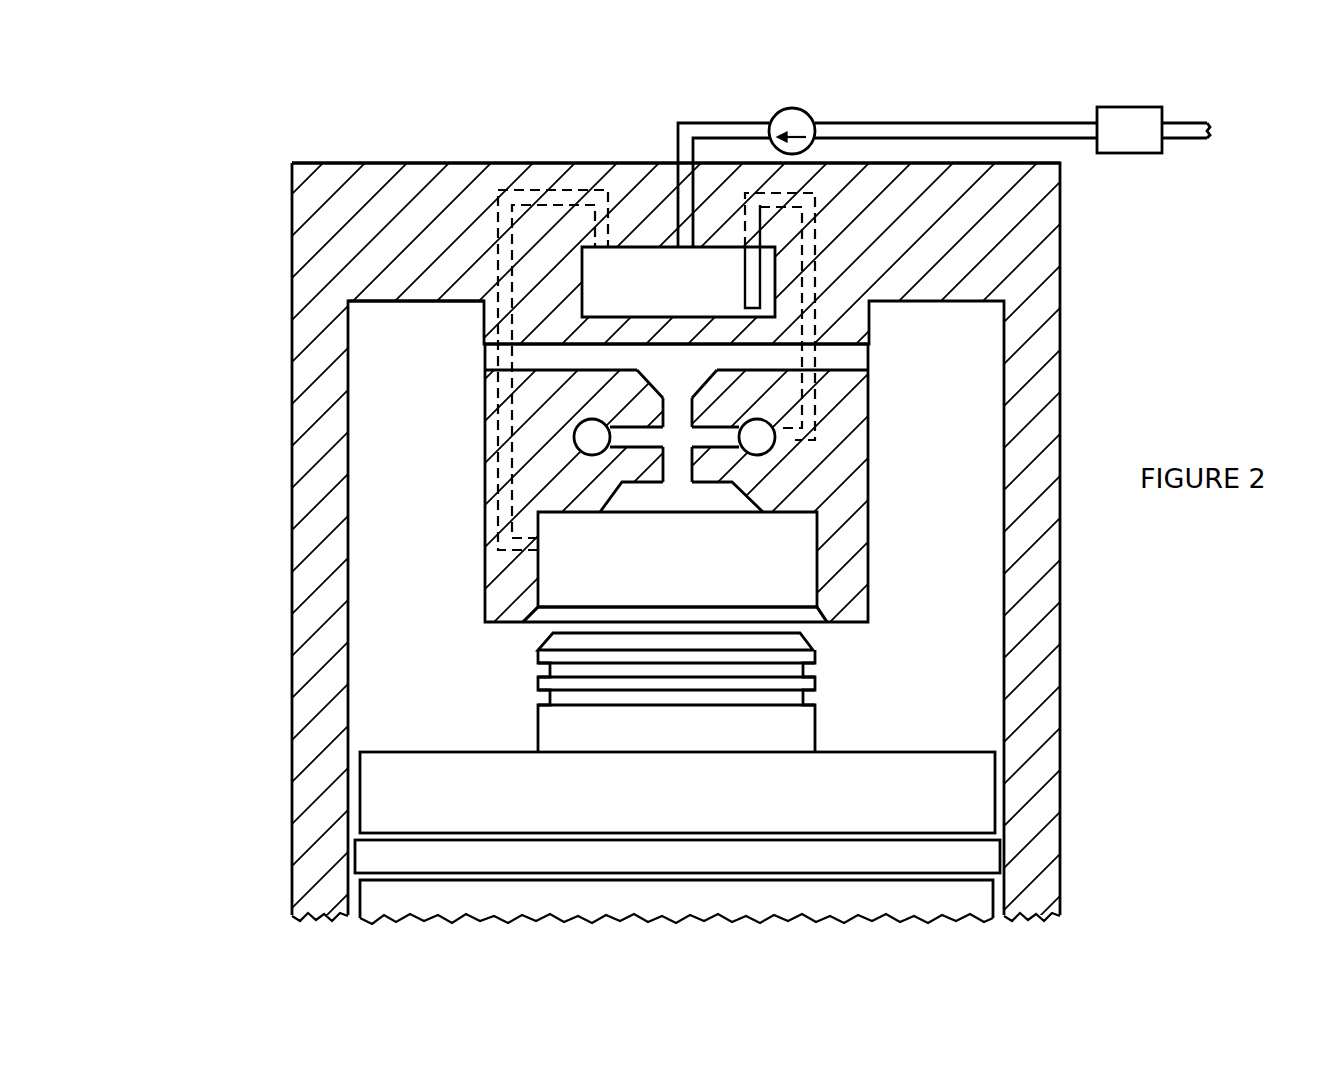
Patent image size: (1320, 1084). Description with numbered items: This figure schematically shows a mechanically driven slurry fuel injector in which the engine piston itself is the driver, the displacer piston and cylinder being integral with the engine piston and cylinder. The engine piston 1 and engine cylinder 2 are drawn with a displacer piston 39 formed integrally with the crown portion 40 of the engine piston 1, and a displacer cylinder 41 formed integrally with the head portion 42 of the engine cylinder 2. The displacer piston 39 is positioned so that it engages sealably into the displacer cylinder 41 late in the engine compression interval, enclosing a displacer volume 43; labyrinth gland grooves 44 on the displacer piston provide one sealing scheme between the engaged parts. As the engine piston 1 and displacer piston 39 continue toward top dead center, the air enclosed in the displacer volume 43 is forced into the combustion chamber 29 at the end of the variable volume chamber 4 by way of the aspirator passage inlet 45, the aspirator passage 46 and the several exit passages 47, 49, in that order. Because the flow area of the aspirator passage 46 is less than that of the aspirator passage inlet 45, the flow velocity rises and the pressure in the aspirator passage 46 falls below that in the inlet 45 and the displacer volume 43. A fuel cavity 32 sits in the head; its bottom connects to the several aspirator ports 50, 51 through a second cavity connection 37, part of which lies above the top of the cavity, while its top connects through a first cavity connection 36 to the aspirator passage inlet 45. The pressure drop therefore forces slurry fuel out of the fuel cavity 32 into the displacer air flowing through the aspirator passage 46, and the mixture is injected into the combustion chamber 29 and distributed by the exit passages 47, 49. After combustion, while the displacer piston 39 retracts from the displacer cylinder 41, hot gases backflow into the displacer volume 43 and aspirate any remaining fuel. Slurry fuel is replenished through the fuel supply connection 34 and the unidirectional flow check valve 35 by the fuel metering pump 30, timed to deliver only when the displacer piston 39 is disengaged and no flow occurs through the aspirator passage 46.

The engine piston 1 is at (962, 905).
The engine cylinder 2 is at (347, 800).
The variable volume chamber 4 is at (950, 583).
The combustion chamber 29 is at (390, 343).
The fuel metering pump 30 is at (1127, 140).
The fuel cavity 32 is at (660, 263).
The fuel supply connection 34 is at (1065, 130).
The unidirectional flow check valve 35 is at (775, 116).
The first cavity connection 36 is at (555, 197).
The second cavity connection 37 is at (787, 200).
The displacer piston 39 is at (780, 737).
The crown portion 40 is at (935, 805).
The displacer cylinder 41 is at (808, 530).
The head portion 42 is at (935, 287).
The displacer volume 43 is at (563, 583).
The labyrinth gland grooves 44 is at (537, 668).
The aspirator passage inlet 45 is at (633, 525).
The aspirator passage 46 is at (676, 462).
The aspirator passage exit passage 47 is at (525, 362).
The aspirator passage exit passage 49 is at (847, 360).
The aspirator port 50 is at (652, 435).
The aspirator port 51 is at (700, 440).